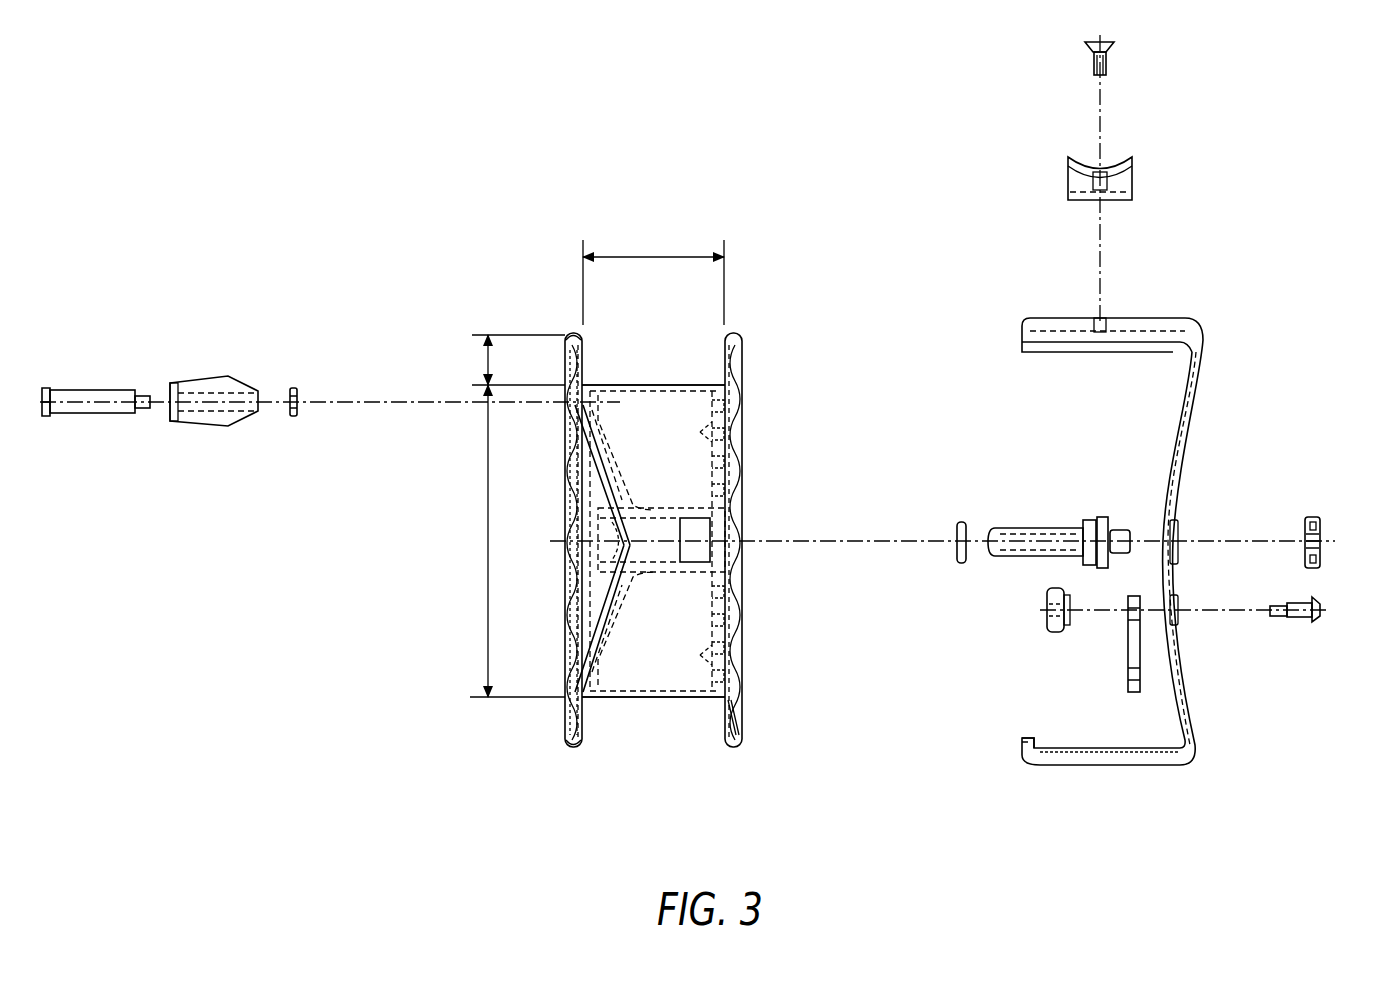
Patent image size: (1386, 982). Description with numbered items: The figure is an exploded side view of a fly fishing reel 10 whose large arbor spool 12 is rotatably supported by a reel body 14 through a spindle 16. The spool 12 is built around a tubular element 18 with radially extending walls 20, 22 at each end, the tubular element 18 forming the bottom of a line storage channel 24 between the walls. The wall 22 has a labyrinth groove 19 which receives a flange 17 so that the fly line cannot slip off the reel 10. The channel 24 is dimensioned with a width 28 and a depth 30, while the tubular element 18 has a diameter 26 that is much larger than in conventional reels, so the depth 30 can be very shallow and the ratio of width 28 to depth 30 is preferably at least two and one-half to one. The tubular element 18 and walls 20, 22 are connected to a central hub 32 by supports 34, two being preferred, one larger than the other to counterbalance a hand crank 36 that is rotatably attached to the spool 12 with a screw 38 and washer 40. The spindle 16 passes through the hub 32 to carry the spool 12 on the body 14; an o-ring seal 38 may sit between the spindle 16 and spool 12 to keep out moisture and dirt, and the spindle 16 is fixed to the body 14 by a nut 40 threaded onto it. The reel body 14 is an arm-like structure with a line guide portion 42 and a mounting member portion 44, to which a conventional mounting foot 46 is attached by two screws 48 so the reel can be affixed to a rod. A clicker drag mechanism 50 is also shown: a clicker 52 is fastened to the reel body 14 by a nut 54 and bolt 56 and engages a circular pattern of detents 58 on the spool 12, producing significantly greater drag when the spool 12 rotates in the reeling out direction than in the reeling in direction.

The fly fishing reel 10 is at (538, 248).
The large arbor spool 12 is at (750, 350).
The reel body 14 is at (1129, 547).
The spindle 16 is at (1035, 528).
The flange 17 is at (1022, 745).
The tubular element 18 is at (622, 700).
The labyrinth groove 19 is at (585, 340).
The radially extending wall 20 is at (741, 745).
The radially extending wall 22 is at (568, 737).
The line storage channel 24 is at (682, 376).
The diameter 26 is at (488, 537).
The width 28 is at (655, 257).
The depth 30 is at (488, 362).
The hub 32 is at (664, 574).
The supports 34 is at (620, 505).
The hand crank 36 is at (222, 378).
The screw 38 is at (90, 388).
The washer 40 is at (292, 388).
The line guide portion 42 is at (1060, 765).
The mounting member portion 44 is at (1160, 318).
The mounting foot 46 is at (1132, 178).
The screw 48 is at (1114, 45).
The clicker drag mechanism 50 is at (1172, 666).
The clicker 52 is at (1128, 692).
The nut 54 is at (1047, 625).
The bolt 56 is at (1320, 620).
The detents 58 is at (700, 432).